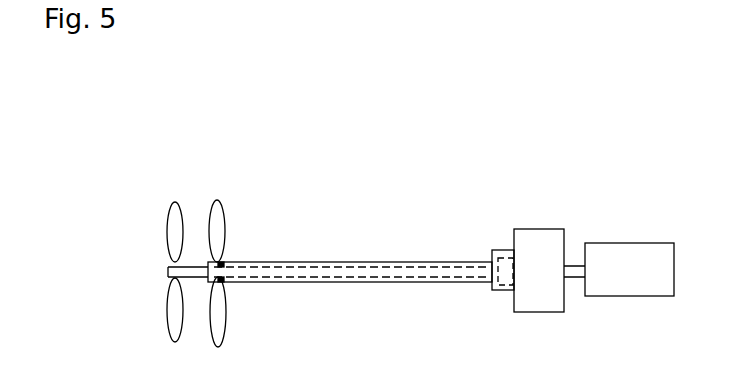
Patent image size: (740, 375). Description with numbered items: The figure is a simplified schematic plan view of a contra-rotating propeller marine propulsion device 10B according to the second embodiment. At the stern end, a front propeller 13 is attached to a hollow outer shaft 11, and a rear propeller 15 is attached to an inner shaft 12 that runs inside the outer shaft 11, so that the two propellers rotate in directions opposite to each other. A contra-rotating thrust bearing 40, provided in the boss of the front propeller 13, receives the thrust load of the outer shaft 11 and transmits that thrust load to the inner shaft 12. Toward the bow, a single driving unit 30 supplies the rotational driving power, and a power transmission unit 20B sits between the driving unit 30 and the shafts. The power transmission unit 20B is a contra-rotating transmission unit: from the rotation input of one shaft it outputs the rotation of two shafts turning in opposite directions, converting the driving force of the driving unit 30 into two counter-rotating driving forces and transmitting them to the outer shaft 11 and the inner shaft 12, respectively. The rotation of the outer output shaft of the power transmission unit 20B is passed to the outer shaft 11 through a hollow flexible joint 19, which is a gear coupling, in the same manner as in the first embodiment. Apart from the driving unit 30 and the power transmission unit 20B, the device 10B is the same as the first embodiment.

The contra-rotating propeller marine propulsion device 10B is at (345, 186).
The rear propeller 15 is at (178, 206).
The front propeller 13 is at (224, 203).
The outer shaft 11 is at (398, 259).
The inner shaft 12 is at (378, 276).
The contra-rotating thrust bearing 40 is at (226, 263).
The flexible joint 19 is at (497, 259).
The power transmission unit 20B is at (539, 229).
The driving unit 30 is at (623, 250).